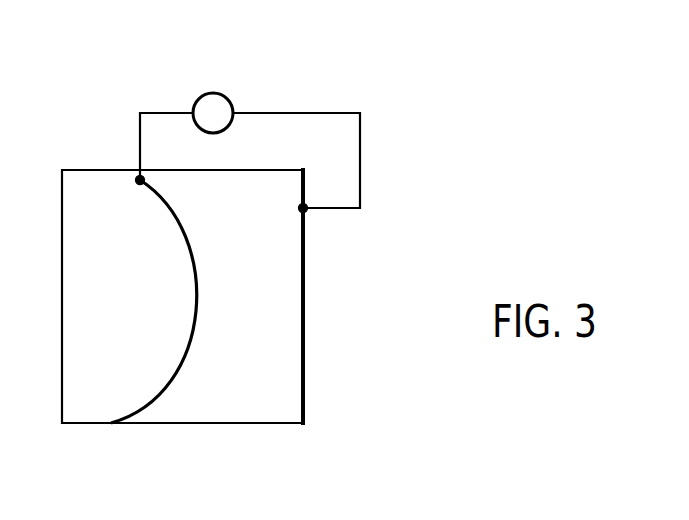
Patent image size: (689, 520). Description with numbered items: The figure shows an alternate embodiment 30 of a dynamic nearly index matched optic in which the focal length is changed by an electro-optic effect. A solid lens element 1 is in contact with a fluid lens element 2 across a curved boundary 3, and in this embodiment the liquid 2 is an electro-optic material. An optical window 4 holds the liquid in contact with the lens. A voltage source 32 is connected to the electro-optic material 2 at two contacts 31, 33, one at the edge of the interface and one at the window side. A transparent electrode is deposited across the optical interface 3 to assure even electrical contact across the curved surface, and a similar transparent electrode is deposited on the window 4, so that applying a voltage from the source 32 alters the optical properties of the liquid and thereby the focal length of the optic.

The solid lens element 1 is at (130, 304).
The fluid lens element 2 is at (264, 304).
The boundary 3 is at (172, 380).
The optical window 4 is at (304, 397).
The alternate embodiment 30 is at (424, 173).
The contact 31 is at (138, 178).
The voltage source 32 is at (213, 93).
The contact 33 is at (305, 212).